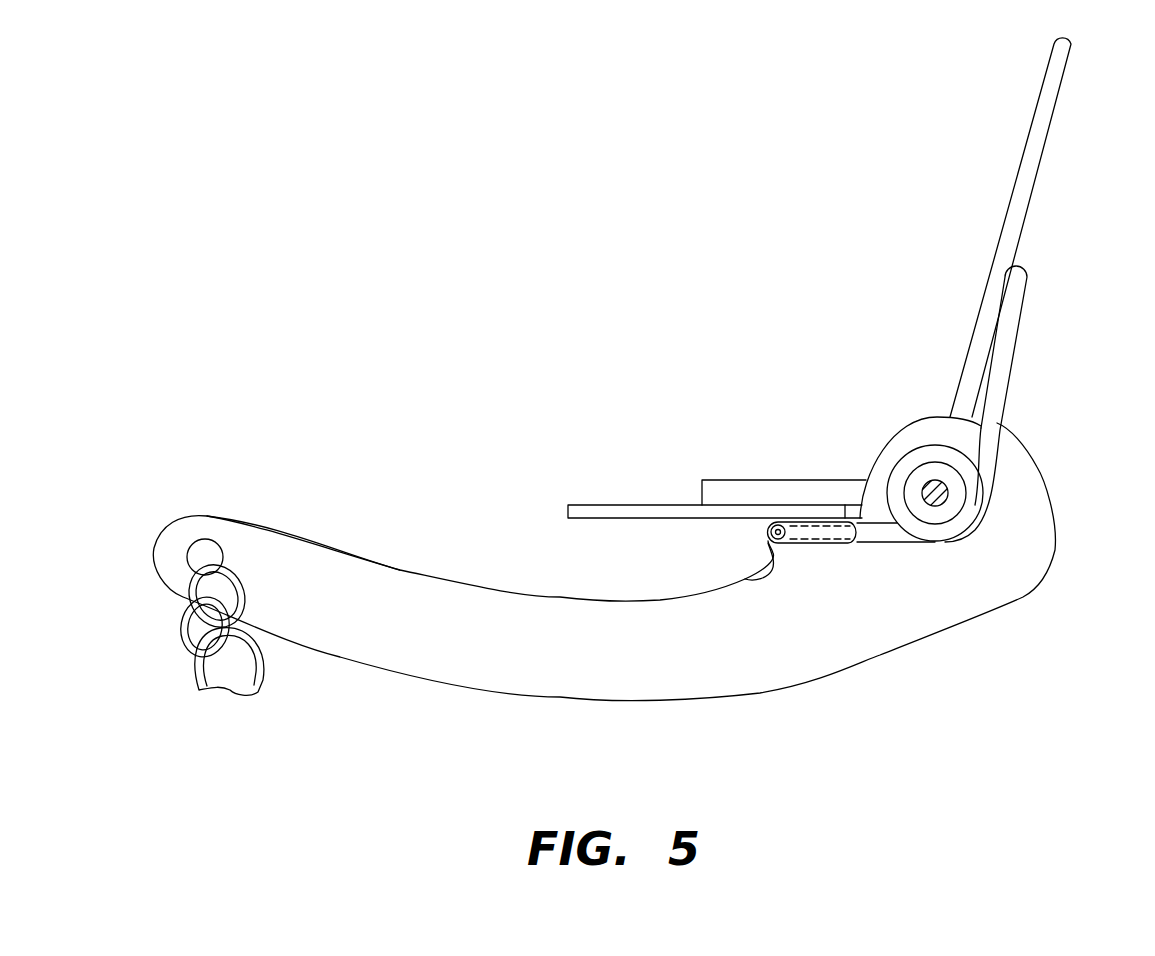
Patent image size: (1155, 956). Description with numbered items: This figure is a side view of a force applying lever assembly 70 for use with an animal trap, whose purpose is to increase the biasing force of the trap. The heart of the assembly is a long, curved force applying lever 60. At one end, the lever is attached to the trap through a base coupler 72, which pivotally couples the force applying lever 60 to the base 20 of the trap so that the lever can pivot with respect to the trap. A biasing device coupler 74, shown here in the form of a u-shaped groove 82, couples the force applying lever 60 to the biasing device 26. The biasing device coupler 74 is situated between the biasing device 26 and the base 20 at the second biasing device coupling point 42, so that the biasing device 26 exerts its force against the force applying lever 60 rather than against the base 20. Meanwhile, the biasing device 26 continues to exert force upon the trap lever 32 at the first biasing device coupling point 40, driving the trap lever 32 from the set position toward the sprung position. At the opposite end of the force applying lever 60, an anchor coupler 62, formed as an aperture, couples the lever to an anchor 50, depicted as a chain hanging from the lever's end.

The force applying lever assembly 70 is at (247, 199).
The force applying lever 60 is at (373, 575).
The anchor coupler 62 is at (202, 545).
The anchor 50 is at (148, 663).
The base 20 is at (598, 508).
The base coupler 72 is at (727, 482).
The second biasing device coupling point 42 is at (825, 523).
The biasing device coupler 74 is at (793, 530).
The u-shaped groove 82 is at (768, 542).
The biasing device 26 is at (942, 533).
The trap lever 32 is at (1032, 158).
The first biasing device coupling point 40 is at (1007, 343).